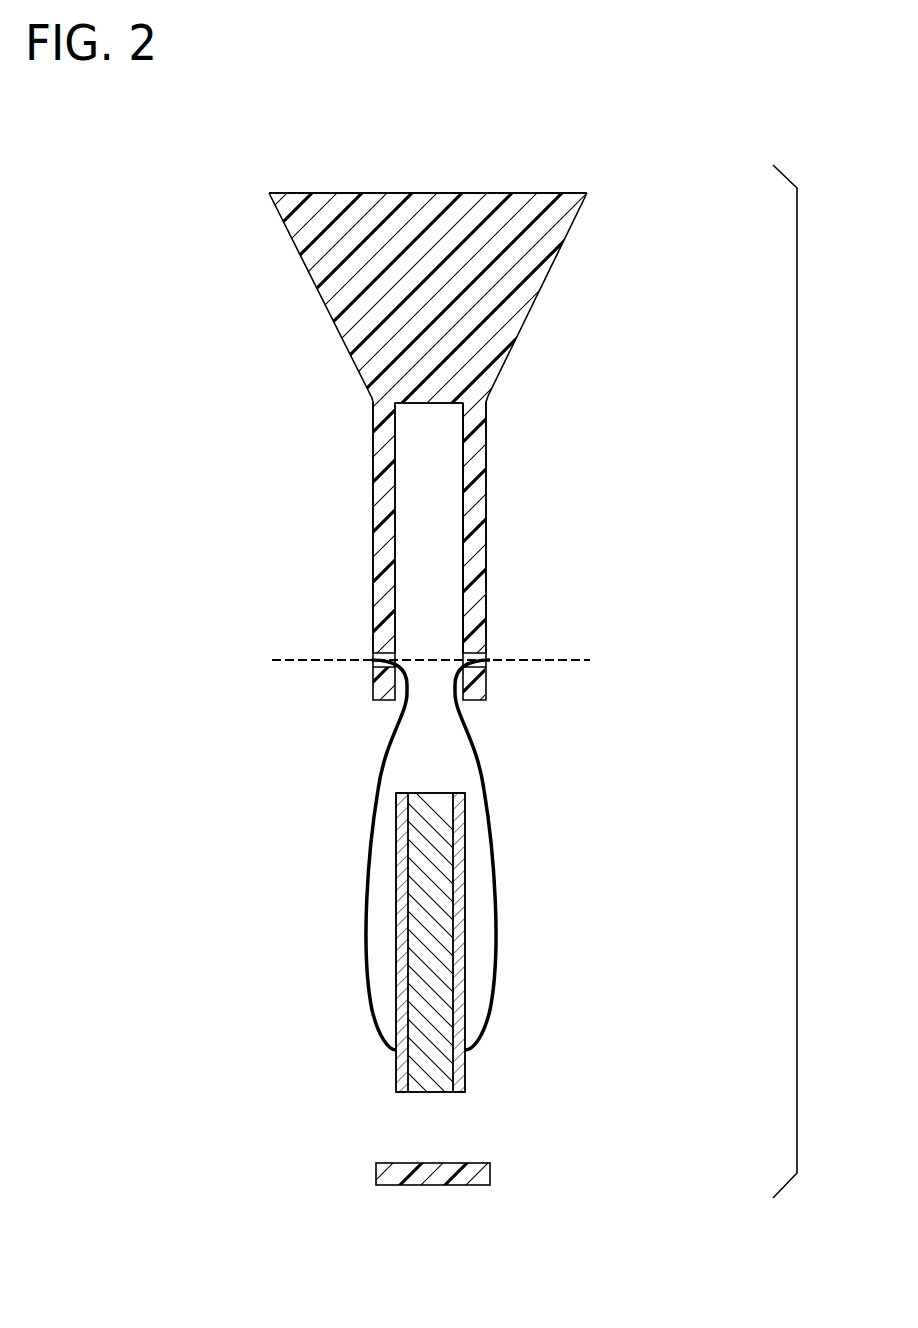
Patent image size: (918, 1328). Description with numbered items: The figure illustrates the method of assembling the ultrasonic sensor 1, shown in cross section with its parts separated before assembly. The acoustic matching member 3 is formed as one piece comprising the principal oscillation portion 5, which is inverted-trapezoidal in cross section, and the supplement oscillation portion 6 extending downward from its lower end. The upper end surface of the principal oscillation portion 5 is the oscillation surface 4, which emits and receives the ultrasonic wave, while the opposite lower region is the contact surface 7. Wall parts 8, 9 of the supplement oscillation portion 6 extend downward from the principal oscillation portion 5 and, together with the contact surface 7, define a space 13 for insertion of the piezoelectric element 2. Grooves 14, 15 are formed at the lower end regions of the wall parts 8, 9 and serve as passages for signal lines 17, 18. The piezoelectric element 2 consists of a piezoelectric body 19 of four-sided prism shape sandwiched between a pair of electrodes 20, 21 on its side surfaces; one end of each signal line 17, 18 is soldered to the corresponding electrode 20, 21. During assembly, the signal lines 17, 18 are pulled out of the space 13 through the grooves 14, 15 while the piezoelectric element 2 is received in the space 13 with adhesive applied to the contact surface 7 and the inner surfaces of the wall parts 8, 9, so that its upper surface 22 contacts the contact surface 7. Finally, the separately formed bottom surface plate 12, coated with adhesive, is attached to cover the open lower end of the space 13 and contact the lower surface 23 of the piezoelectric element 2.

The ultrasonic sensor 1 is at (628, 166).
The piezoelectric element 2 is at (466, 838).
The acoustic matching member 3 is at (514, 340).
The oscillation surface 4 is at (296, 193).
The principal oscillation portion 5 is at (520, 271).
The supplement oscillation portion 6 is at (478, 441).
The contact surface 7 is at (405, 404).
The wall part 8 is at (373, 533).
The wall part 9 is at (480, 538).
The bottom surface plate 12 is at (490, 1172).
The space 13 is at (433, 508).
The groove 14 is at (374, 660).
The groove 15 is at (488, 660).
The signal line 17 is at (388, 733).
The signal line 18 is at (474, 735).
The piezoelectric body 19 is at (440, 882).
The electrode 20 is at (400, 943).
The electrode 21 is at (460, 945).
The upper surface 22 is at (430, 793).
The lower surface 23 is at (432, 1092).